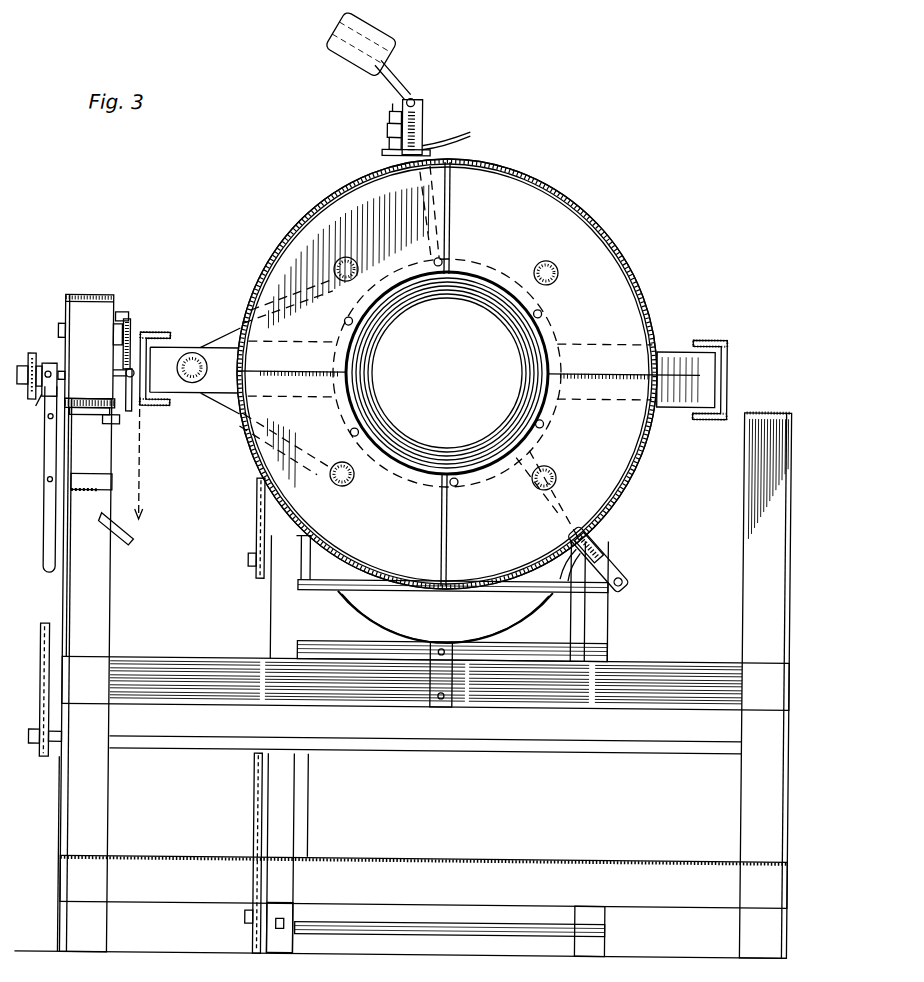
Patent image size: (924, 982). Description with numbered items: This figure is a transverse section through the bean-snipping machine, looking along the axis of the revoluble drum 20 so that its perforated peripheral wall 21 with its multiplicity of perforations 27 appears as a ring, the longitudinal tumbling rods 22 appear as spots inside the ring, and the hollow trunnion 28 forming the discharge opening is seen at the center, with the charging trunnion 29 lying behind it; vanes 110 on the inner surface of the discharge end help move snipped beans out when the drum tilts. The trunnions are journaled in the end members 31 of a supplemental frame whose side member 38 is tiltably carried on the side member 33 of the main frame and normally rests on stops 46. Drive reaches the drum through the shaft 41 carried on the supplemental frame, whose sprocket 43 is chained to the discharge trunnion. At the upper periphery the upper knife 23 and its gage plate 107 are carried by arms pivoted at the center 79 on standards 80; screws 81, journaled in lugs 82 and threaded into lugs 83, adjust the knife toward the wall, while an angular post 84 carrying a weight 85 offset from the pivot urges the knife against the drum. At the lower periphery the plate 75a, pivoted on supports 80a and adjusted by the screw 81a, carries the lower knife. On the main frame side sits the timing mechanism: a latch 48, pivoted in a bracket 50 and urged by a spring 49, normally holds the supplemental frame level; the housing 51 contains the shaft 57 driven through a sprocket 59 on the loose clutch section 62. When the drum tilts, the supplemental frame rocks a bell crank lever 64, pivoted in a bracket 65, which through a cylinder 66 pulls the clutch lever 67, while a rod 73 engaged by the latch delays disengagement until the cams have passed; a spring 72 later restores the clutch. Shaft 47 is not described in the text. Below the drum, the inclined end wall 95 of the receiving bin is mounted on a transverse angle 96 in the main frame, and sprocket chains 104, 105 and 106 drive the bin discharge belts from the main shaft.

The revoluble drum 20 is at (447, 374).
The perforated peripheral wall 21 is at (630, 282).
The longitudinal tumbling rods 22 is at (372, 248).
The upper knife 23 is at (405, 198).
The perforations 27 is at (560, 210).
The hollow trunnion 28 is at (398, 300).
The hollow trunnion 29 is at (558, 530).
The end members of supplemental frame 31 is at (672, 408).
The side member of main frame 33 is at (92, 418).
The side member of supplemental frame 38 is at (165, 330).
The shaft 41 is at (217, 370).
The sprocket 43 is at (190, 392).
The stops 46 is at (312, 446).
The shaft 47 is at (128, 426).
The latch 48 is at (132, 420).
The spring 49 is at (122, 316).
The bracket 50 is at (126, 377).
The housing 51 is at (66, 316).
The shaft 57 is at (62, 372).
The sprocket 59 is at (33, 358).
The clutch section 62 is at (36, 394).
The bell crank lever 64 is at (138, 542).
The bracket 65 is at (144, 514).
The cylinder 66 is at (90, 478).
The clutch lever 67 is at (46, 436).
The spring 72 is at (75, 496).
The rod 73 is at (112, 428).
The plate 75a is at (586, 548).
The pivot center 79 is at (414, 103).
The uprights or standards 80 is at (422, 130).
The supports 80a is at (626, 574).
The screws 81 is at (385, 131).
The screw 81a is at (610, 550).
The lugs 82 is at (386, 118).
The lugs 83 is at (382, 152).
The angular post 84 is at (398, 88).
The weight 85 is at (380, 50).
The end wall of bin 95 is at (555, 604).
The transverse angle 96 is at (350, 670).
The sprocket chain 104 is at (258, 778).
The sprocket chain 105 is at (45, 757).
The sprocket chain 106 is at (258, 520).
The gage plate 107 is at (466, 136).
The vanes 110 is at (448, 250).